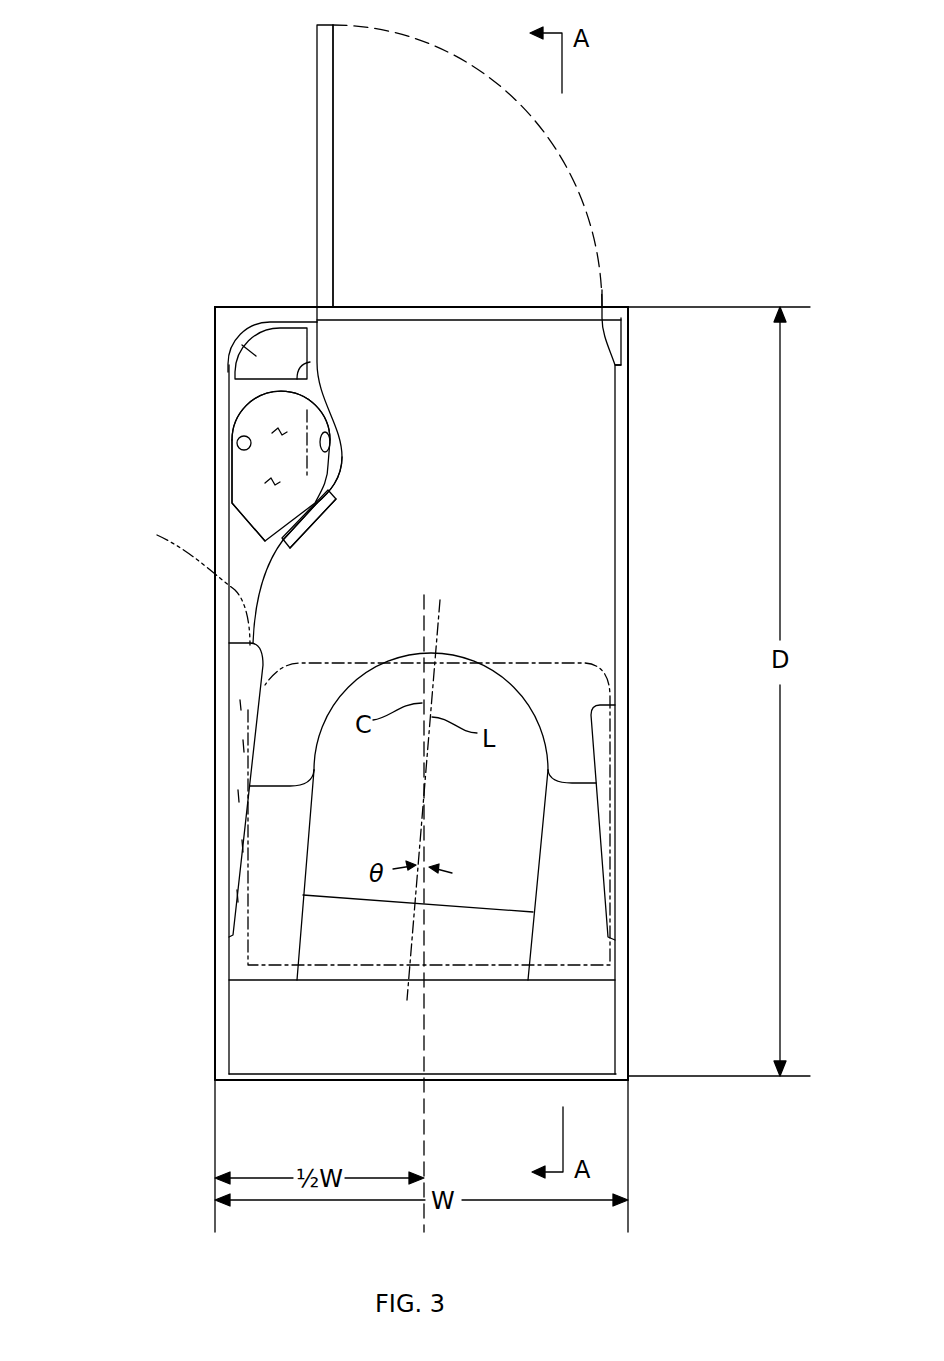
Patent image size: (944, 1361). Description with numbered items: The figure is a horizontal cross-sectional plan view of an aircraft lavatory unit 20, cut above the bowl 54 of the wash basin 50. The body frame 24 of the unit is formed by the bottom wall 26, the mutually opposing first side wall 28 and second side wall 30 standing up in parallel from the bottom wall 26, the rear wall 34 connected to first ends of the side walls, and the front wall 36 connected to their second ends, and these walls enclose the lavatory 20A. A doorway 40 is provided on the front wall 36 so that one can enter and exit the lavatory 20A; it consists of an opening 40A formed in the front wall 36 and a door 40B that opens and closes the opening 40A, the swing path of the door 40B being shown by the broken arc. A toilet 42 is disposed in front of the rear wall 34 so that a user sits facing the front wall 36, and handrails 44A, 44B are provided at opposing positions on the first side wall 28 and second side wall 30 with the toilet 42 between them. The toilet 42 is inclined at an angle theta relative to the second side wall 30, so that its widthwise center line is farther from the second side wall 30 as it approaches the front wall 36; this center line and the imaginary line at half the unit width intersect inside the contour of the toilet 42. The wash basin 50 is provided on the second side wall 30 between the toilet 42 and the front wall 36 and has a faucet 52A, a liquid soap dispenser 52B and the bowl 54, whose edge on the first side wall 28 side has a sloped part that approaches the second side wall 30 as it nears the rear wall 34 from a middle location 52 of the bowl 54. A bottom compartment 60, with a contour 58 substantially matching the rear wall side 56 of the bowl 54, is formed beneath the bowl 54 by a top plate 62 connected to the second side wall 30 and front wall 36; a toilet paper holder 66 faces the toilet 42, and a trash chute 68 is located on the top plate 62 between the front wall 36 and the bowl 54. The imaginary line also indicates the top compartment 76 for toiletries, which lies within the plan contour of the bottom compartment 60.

The aircraft lavatory unit 20 is at (158, 245).
The lavatory 20A is at (540, 489).
The body frame 24 is at (214, 1040).
The bottom wall 26 is at (563, 520).
The first side wall 28 is at (630, 616).
The second side wall 30 is at (213, 632).
The rear wall 34 is at (402, 1080).
The front wall 36 is at (267, 307).
The doorway 40 is at (422, 307).
The opening 40A is at (497, 310).
The door 40B is at (333, 107).
The toilet 42 is at (502, 703).
The handrail 44A is at (607, 725).
The handrail 44B is at (230, 683).
The wash basin 50 is at (349, 492).
The middle location 52 is at (344, 455).
The faucet 52A is at (232, 482).
The liquid soap dispenser 52B is at (240, 427).
The bowl 54 is at (341, 453).
The rear wall side 56 is at (306, 516).
The contour 58 is at (284, 528).
The bottom compartment 60 is at (323, 393).
The top plate 62 is at (310, 362).
The toilet paper holder 66 is at (310, 528).
The trash chute 68 is at (255, 353).
The top compartment 76 is at (359, 744).